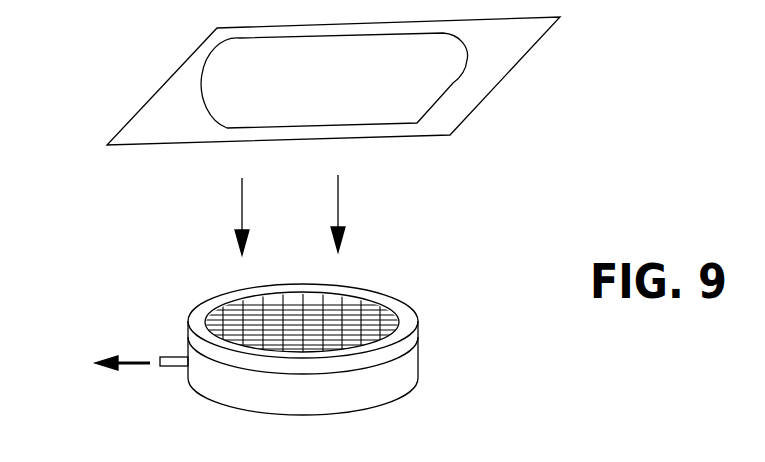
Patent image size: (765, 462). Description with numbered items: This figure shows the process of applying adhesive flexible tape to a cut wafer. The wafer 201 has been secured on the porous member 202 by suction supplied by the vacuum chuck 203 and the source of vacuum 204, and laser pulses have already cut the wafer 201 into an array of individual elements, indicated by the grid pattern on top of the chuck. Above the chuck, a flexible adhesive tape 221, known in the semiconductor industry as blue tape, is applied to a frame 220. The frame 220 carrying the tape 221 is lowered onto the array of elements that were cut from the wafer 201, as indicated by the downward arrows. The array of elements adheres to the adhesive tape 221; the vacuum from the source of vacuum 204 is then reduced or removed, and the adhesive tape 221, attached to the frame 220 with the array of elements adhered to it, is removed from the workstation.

The wafer 201 is at (217, 310).
The porous member 202 is at (187, 327).
The vacuum chuck 203 is at (256, 413).
The source of vacuum 204 is at (167, 367).
The frame 220 is at (107, 145).
The flexible adhesive tape 221 is at (323, 82).